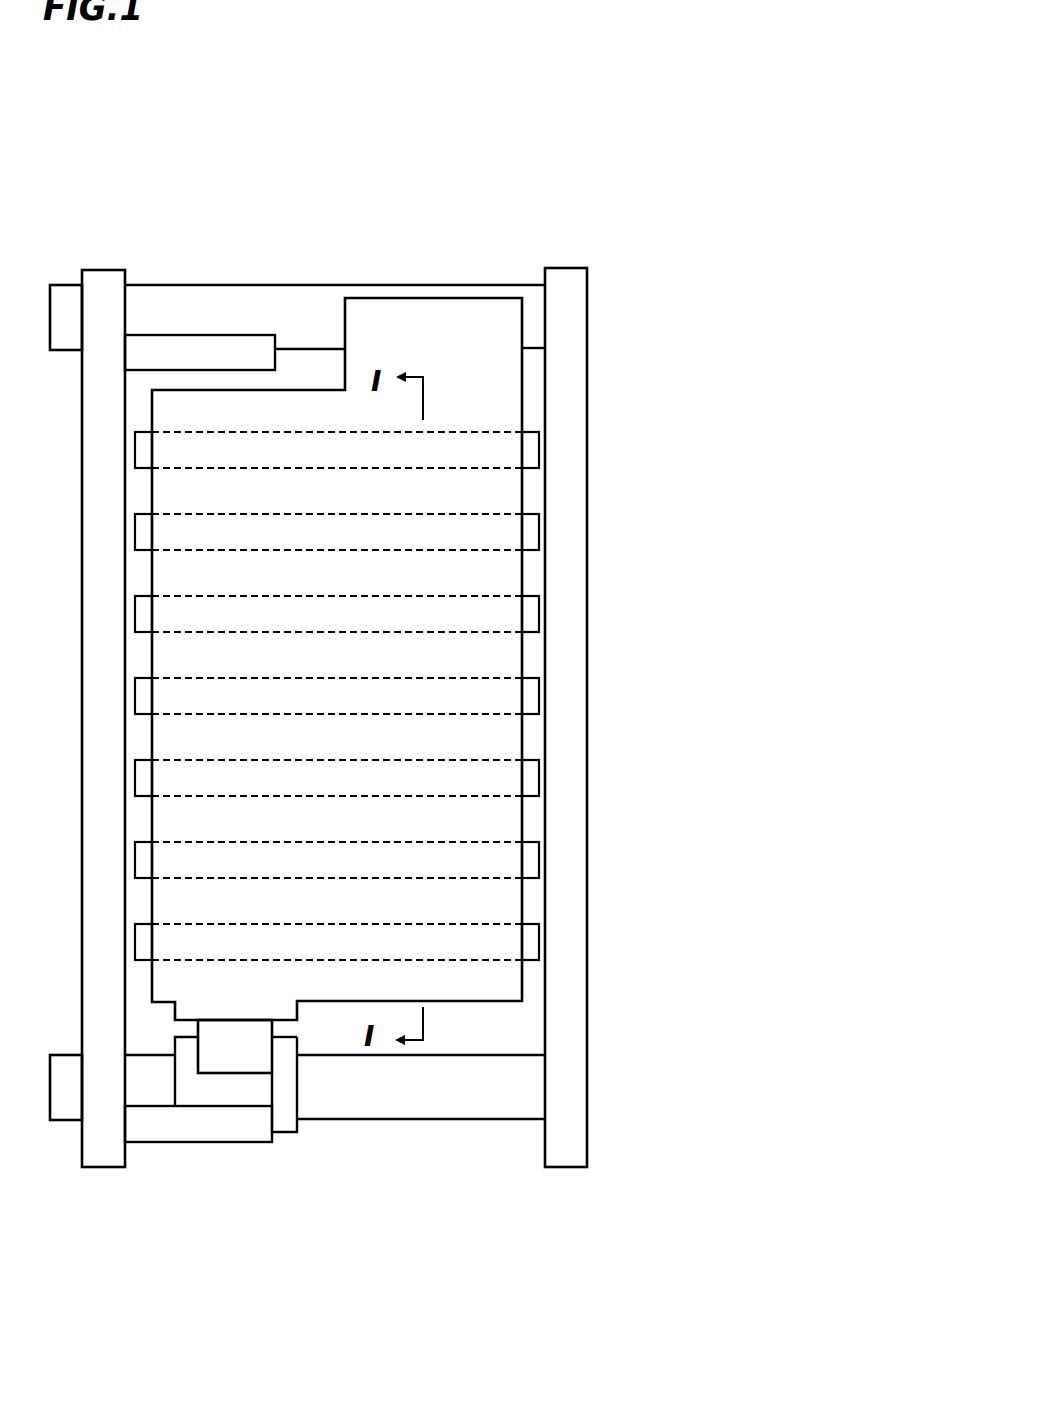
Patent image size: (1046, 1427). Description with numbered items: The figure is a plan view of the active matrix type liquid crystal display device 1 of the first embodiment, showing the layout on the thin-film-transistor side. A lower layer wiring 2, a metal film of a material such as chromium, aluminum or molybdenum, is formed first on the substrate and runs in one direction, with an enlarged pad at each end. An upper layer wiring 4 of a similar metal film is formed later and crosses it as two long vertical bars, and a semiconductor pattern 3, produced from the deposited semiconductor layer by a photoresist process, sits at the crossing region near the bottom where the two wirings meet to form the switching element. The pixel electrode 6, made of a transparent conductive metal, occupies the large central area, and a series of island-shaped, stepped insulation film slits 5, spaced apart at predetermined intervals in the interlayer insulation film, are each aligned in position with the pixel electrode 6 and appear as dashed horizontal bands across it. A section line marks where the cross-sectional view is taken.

The active matrix type liquid crystal display device 1 is at (616, 281).
The lower layer wiring 2 is at (67, 285).
The semiconductor pattern 3 is at (283, 1132).
The upper layer wiring 4 is at (107, 282).
The insulation film slit 5 is at (540, 608).
The pixel electrode 6 is at (385, 313).